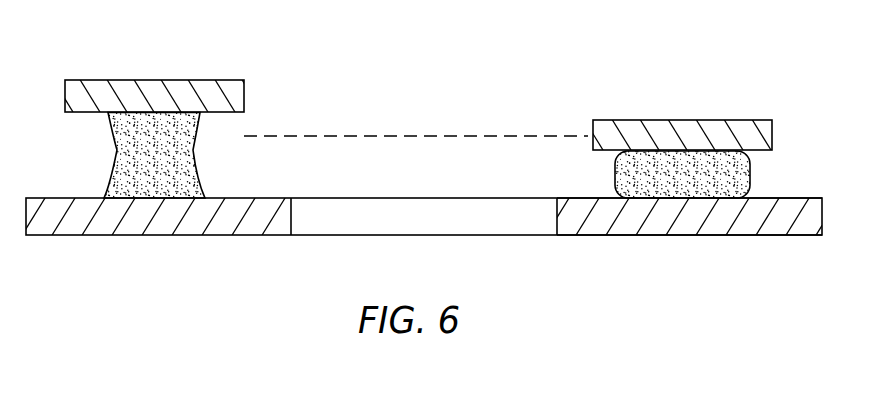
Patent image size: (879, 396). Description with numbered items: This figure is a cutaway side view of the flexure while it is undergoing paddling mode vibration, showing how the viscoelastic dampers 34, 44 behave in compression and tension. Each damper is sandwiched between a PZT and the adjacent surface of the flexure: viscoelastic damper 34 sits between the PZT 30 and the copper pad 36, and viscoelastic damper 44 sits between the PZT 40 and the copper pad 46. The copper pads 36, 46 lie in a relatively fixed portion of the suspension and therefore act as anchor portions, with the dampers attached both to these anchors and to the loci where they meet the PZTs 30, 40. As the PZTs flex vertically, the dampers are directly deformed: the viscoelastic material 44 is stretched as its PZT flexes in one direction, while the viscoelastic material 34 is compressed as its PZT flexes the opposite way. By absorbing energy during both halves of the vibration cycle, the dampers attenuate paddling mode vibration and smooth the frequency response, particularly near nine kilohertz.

The PZT 30 is at (683, 120).
The viscoelastic damper 34 is at (750, 170).
The copper pad 36 is at (705, 236).
The PZT 40 is at (153, 80).
The viscoelastic damper 44 is at (118, 153).
The copper pad 46 is at (115, 235).